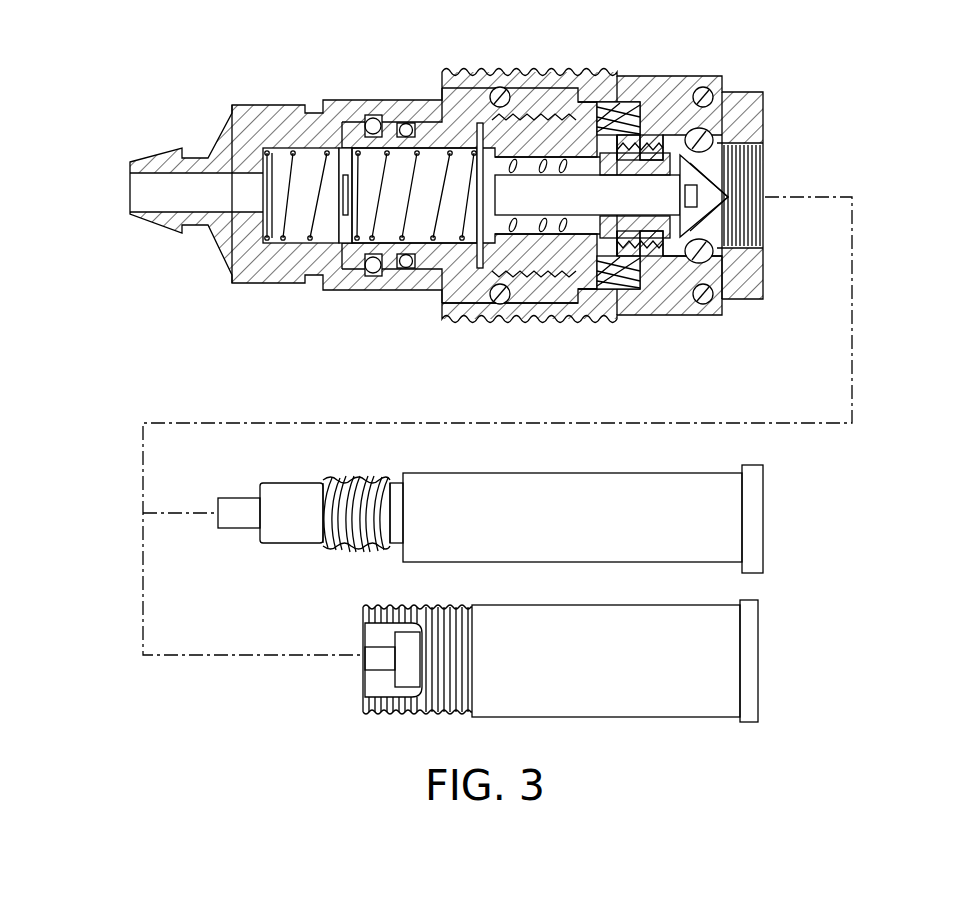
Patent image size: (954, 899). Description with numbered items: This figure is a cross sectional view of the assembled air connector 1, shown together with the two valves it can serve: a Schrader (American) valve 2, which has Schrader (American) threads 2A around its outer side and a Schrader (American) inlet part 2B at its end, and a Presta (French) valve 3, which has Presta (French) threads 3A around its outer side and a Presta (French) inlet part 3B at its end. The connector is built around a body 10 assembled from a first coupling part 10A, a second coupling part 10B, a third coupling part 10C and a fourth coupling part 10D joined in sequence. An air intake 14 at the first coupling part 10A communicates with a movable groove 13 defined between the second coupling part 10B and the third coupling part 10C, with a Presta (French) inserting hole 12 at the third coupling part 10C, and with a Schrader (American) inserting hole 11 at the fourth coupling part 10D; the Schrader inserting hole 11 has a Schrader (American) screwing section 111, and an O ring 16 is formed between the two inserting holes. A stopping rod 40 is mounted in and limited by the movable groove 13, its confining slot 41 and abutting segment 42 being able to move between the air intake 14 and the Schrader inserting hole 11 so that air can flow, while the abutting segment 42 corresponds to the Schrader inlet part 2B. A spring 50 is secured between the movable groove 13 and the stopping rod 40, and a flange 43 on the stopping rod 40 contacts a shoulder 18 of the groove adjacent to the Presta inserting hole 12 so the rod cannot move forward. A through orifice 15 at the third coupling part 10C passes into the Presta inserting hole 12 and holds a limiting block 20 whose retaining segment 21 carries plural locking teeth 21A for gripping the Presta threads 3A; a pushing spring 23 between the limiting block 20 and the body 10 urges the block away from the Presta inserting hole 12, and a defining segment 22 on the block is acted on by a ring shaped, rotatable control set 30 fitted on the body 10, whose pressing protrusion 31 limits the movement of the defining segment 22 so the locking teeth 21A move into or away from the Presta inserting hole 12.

The air connector 1 is at (146, 257).
The body 10 is at (253, 288).
The first coupling part 10A is at (240, 260).
The second coupling part 10B is at (467, 292).
The third coupling part 10C is at (500, 128).
The fourth coupling part 10D is at (763, 125).
The Schrader (American) inserting hole 11 is at (762, 185).
The Schrader (American) screwing section 111 is at (748, 229).
The Presta (French) inserting hole 12 is at (650, 165).
The movable groove 13 is at (312, 160).
The air intake 14 is at (148, 193).
The through orifice 15 is at (607, 128).
The O ring 16 is at (718, 134).
The shoulder 18 is at (553, 155).
The flange 43 is at (553, 155).
The confining slot 41 is at (587, 240).
The stopping rod 40 is at (540, 228).
The abutting segment 42 is at (720, 187).
The spring 50 is at (292, 224).
The limiting block 20 is at (677, 294).
The retaining segment 21 is at (700, 300).
The locking teeth 21A is at (668, 300).
The defining segment 22 is at (655, 302).
The pushing spring 23 is at (610, 318).
The control set 30 is at (557, 326).
The pressing protrusion 31 is at (591, 302).
The Presta (French) valve 3 is at (753, 517).
The Presta (French) threads 3A is at (360, 478).
The Presta (French) inlet part 3B is at (240, 503).
The Schrader (American) valve 2 is at (755, 642).
The Schrader (American) threads 2A is at (423, 607).
The Schrader (American) inlet part 2B is at (370, 652).